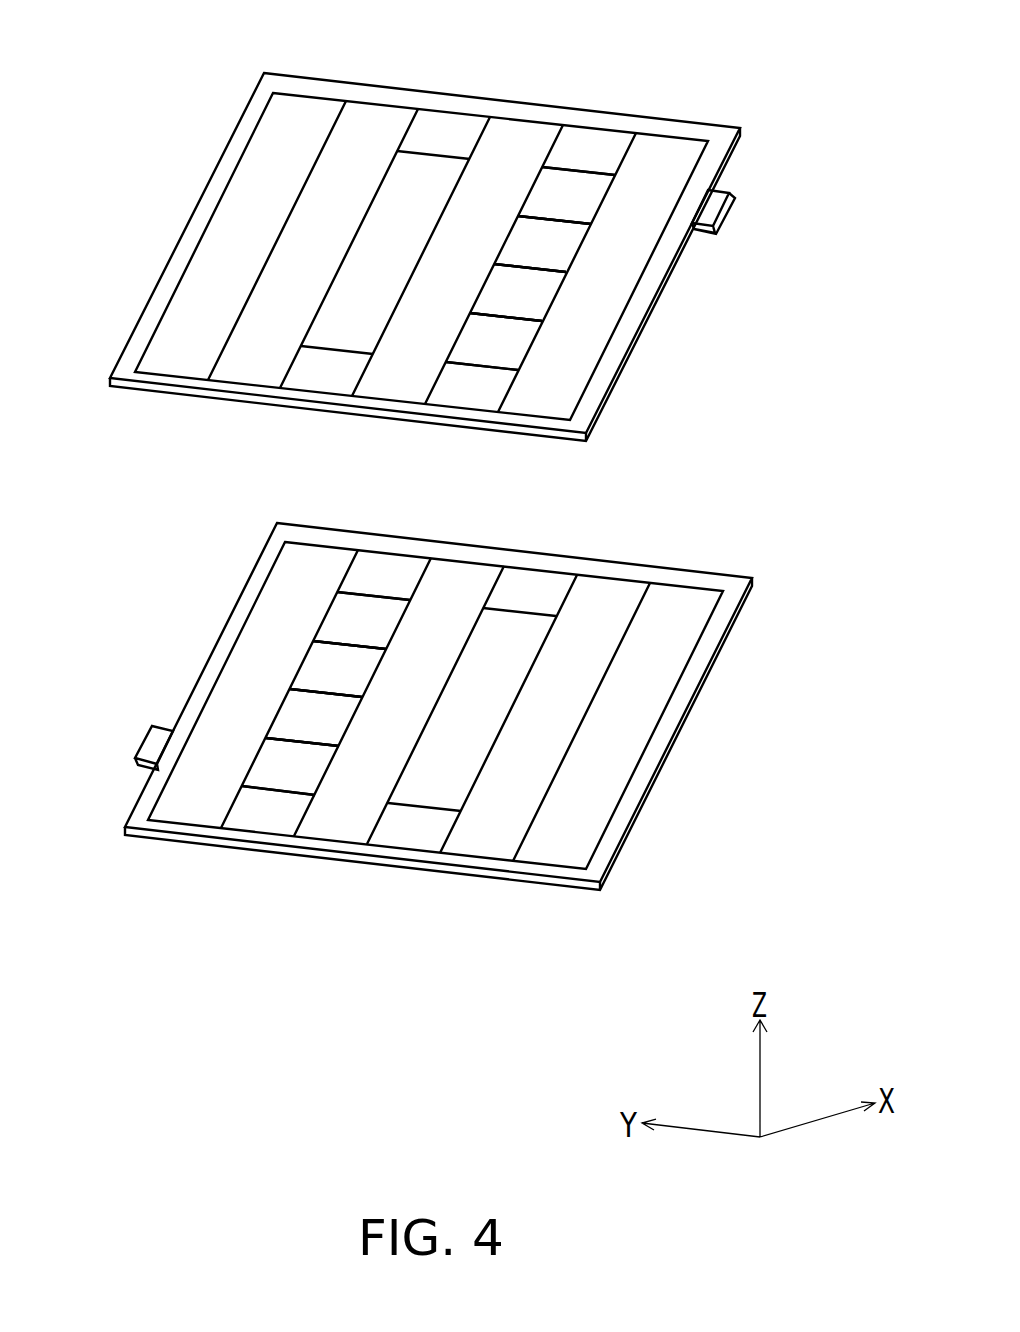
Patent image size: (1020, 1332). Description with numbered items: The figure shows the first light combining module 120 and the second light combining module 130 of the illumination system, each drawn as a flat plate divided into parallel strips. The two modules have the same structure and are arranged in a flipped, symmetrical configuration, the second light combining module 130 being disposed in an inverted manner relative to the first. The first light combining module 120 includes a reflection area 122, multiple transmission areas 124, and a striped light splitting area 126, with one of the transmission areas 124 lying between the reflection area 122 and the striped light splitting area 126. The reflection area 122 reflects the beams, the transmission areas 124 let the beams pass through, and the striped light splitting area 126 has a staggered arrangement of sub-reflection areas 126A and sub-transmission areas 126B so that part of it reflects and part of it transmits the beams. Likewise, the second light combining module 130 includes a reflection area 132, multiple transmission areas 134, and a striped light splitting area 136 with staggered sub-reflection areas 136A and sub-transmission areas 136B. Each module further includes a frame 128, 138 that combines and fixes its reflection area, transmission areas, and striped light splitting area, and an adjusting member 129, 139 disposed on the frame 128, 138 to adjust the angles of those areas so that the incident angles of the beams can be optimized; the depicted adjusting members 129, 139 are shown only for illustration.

The first light combining module 120 is at (717, 872).
The reflection area 122 is at (435, 793).
The transmission areas 124 is at (322, 820).
The striped light splitting area 126 is at (348, 565).
The sub-reflection areas 126A is at (318, 668).
The sub-transmission areas 126B is at (340, 624).
The frame 128 is at (370, 545).
The adjusting member 129 is at (140, 743).
The second light combining module 130 is at (229, 84).
The reflection area 132 is at (433, 172).
The transmission areas 134 is at (367, 120).
The striped light splitting area 136 is at (505, 388).
The sub-reflection areas 136A is at (562, 248).
The sub-transmission areas 136B is at (583, 200).
The frame 138 is at (708, 128).
The adjusting member 139 is at (727, 212).